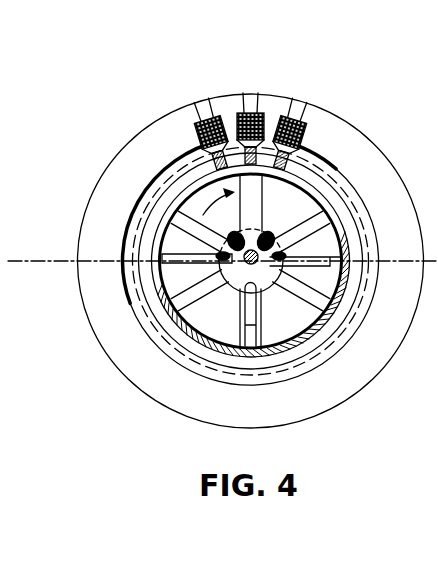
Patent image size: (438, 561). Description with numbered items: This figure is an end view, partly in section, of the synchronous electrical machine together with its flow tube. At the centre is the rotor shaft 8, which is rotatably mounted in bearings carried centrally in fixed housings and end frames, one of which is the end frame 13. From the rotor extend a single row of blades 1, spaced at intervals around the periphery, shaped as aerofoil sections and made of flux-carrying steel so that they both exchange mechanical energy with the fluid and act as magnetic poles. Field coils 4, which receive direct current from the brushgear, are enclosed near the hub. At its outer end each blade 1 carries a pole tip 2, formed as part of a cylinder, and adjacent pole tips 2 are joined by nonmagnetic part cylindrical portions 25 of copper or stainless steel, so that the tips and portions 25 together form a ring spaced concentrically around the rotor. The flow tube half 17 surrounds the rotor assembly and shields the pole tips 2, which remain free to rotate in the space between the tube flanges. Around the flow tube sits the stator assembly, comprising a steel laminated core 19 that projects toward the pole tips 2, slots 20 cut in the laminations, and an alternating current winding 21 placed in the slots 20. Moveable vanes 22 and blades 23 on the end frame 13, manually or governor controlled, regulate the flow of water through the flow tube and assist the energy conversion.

The blades 1 is at (198, 235).
The pole tip 2 is at (126, 220).
The field coils 4 is at (266, 232).
The rotor shaft 8 is at (247, 322).
The end frame 13 is at (240, 278).
The flow tube half 17 is at (195, 342).
The steel laminated core 19 is at (272, 103).
The slots 20 is at (242, 113).
The winding 21 is at (137, 168).
The moveable vanes 22 is at (200, 148).
The moveable blades 23 is at (262, 282).
The nonmagnetic part cylindrical portions 25 is at (305, 182).